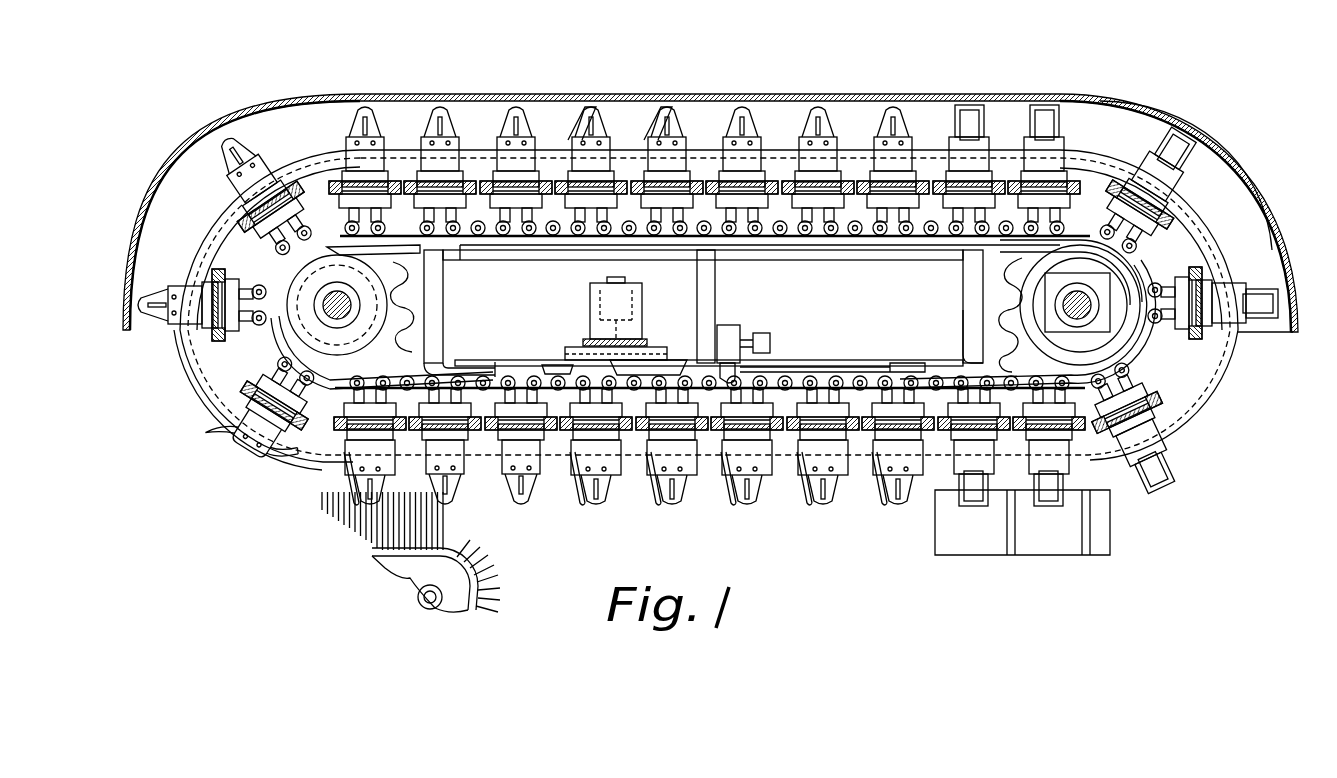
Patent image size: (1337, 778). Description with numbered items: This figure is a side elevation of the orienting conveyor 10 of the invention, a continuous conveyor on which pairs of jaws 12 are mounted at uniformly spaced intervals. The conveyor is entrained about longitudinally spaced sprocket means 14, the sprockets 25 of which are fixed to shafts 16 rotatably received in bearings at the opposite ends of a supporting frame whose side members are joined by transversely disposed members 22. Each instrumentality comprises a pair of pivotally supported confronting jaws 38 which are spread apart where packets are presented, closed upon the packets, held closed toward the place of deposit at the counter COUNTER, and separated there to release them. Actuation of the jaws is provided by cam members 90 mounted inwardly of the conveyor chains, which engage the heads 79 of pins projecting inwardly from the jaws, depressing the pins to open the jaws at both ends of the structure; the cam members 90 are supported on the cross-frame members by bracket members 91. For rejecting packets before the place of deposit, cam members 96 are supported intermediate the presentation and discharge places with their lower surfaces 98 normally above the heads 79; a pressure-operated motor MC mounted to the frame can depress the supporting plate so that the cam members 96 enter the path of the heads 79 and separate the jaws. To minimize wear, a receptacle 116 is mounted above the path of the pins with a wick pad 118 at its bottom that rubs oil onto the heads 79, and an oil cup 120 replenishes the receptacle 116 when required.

The orienting conveyor 10 is at (926, 132).
The pairs of jaws 12 is at (1064, 127).
The sprocket means 14 is at (1128, 272).
The shafts 16 is at (330, 308).
The transversely disposed members 22 is at (440, 327).
The sprockets 25 is at (1005, 305).
The confronting jaws 38 is at (744, 140).
The heads of the pins 79 is at (825, 375).
The cam members 90 is at (317, 387).
The bracket members 91 is at (452, 343).
The cam members 96 is at (550, 362).
The lower surfaces 98 is at (568, 347).
The receptacle 116 is at (738, 330).
The pad 118 is at (770, 363).
The oil cup 120 is at (775, 345).
The motor MC is at (640, 300).
The counter COUNTER is at (386, 578).